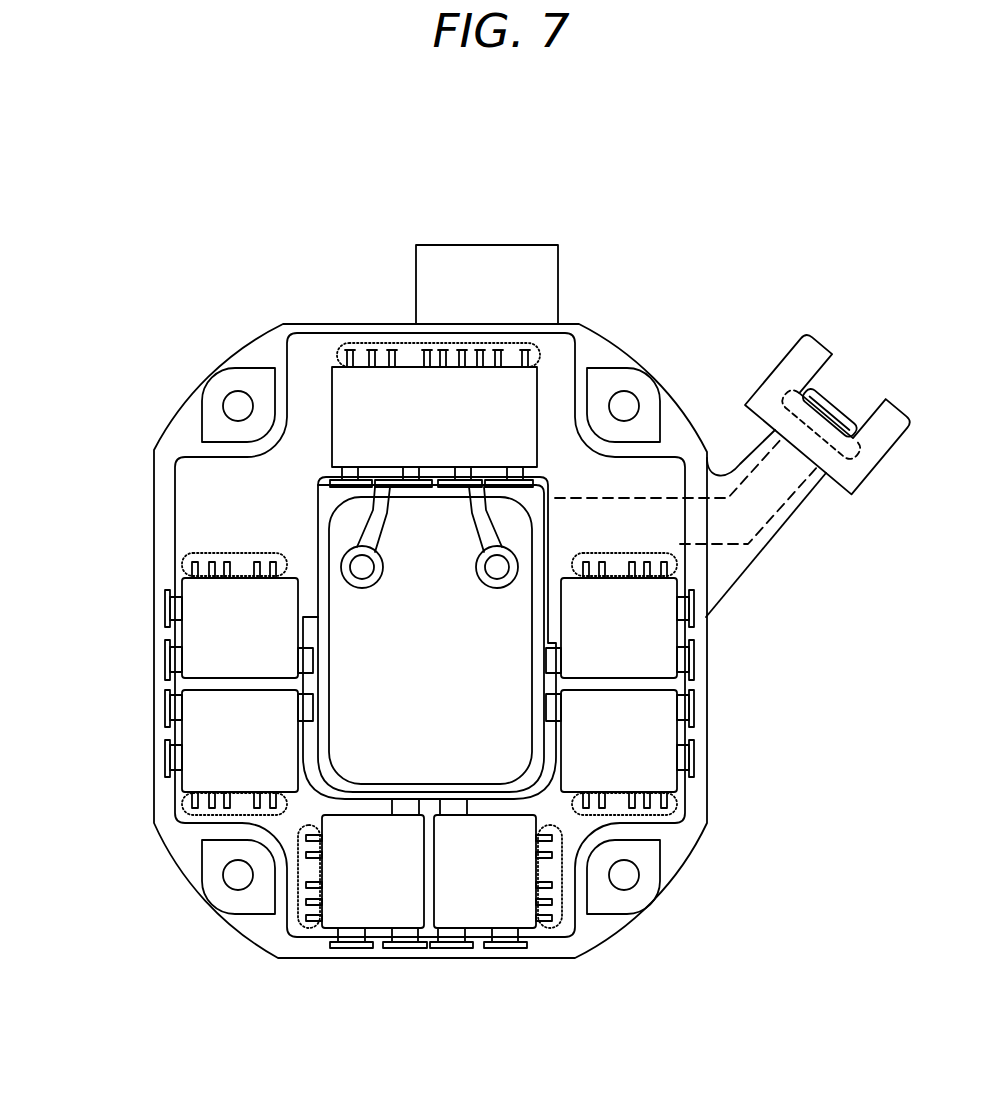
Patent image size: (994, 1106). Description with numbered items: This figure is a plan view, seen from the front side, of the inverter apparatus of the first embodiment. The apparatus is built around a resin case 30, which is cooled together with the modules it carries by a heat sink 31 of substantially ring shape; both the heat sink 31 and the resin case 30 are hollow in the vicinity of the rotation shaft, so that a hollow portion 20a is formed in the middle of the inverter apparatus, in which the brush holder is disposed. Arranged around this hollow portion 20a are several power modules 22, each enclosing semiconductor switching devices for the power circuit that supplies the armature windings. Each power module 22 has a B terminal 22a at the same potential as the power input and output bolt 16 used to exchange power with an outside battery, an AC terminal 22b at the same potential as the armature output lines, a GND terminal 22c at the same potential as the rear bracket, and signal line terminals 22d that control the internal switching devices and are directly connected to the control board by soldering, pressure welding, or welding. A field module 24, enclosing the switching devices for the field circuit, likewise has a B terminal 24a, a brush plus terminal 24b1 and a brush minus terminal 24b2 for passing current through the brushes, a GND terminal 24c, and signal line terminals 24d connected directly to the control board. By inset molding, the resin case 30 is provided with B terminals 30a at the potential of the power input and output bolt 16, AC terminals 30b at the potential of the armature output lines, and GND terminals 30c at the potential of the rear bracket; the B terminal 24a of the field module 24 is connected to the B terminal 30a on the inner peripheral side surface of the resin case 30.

The power input and output bolt 16 is at (860, 367).
The hollow portion 20a is at (470, 652).
The power module 22 is at (193, 640).
The B terminal 22a is at (398, 805).
The AC terminal 22b is at (405, 928).
The GND terminal 22c is at (340, 928).
The signal line terminals 22d is at (297, 897).
The field module 24 is at (512, 432).
The B terminal 24a is at (513, 468).
The brush plus terminal 24b1 is at (463, 468).
The brush minus terminal 24b2 is at (413, 468).
The GND terminal 24c is at (347, 468).
The signal line terminals 24d is at (538, 355).
The resin case 30 is at (167, 497).
The B terminals 30a is at (667, 522).
The AC terminals 30b is at (400, 945).
The GND terminals 30c is at (215, 845).
The heat sink 31 is at (187, 428).